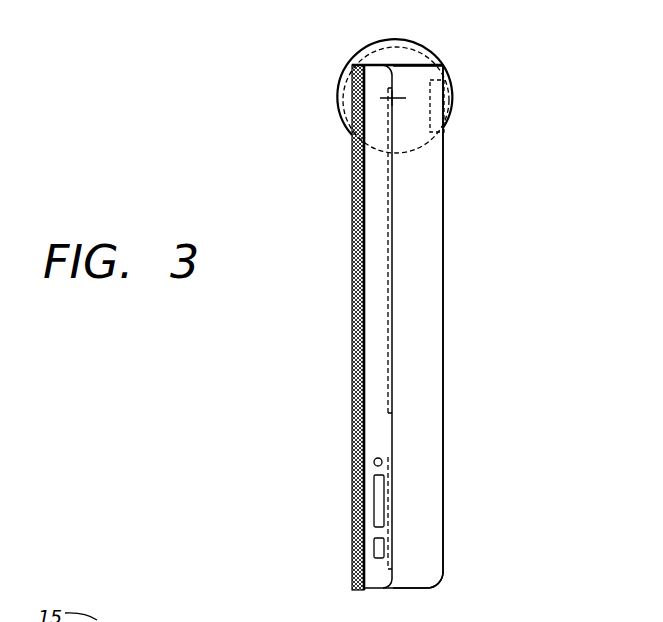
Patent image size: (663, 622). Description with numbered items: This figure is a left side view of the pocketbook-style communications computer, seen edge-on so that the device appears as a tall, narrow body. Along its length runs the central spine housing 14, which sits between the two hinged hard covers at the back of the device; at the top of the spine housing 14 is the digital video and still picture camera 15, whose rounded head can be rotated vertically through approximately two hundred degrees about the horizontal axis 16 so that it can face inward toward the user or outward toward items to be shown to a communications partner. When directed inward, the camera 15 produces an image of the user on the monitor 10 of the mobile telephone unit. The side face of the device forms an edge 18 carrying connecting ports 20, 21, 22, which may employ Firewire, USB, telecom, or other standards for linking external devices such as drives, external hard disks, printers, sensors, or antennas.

The monitor 10 is at (393, 250).
The spine housing 14 is at (422, 205).
The digital video and still picture camera 15 is at (387, 55).
The horizontal axis 16 is at (392, 100).
The edge 18 is at (377, 428).
The connecting port 20 is at (373, 459).
The connecting port 21 is at (378, 490).
The connecting port 22 is at (377, 541).